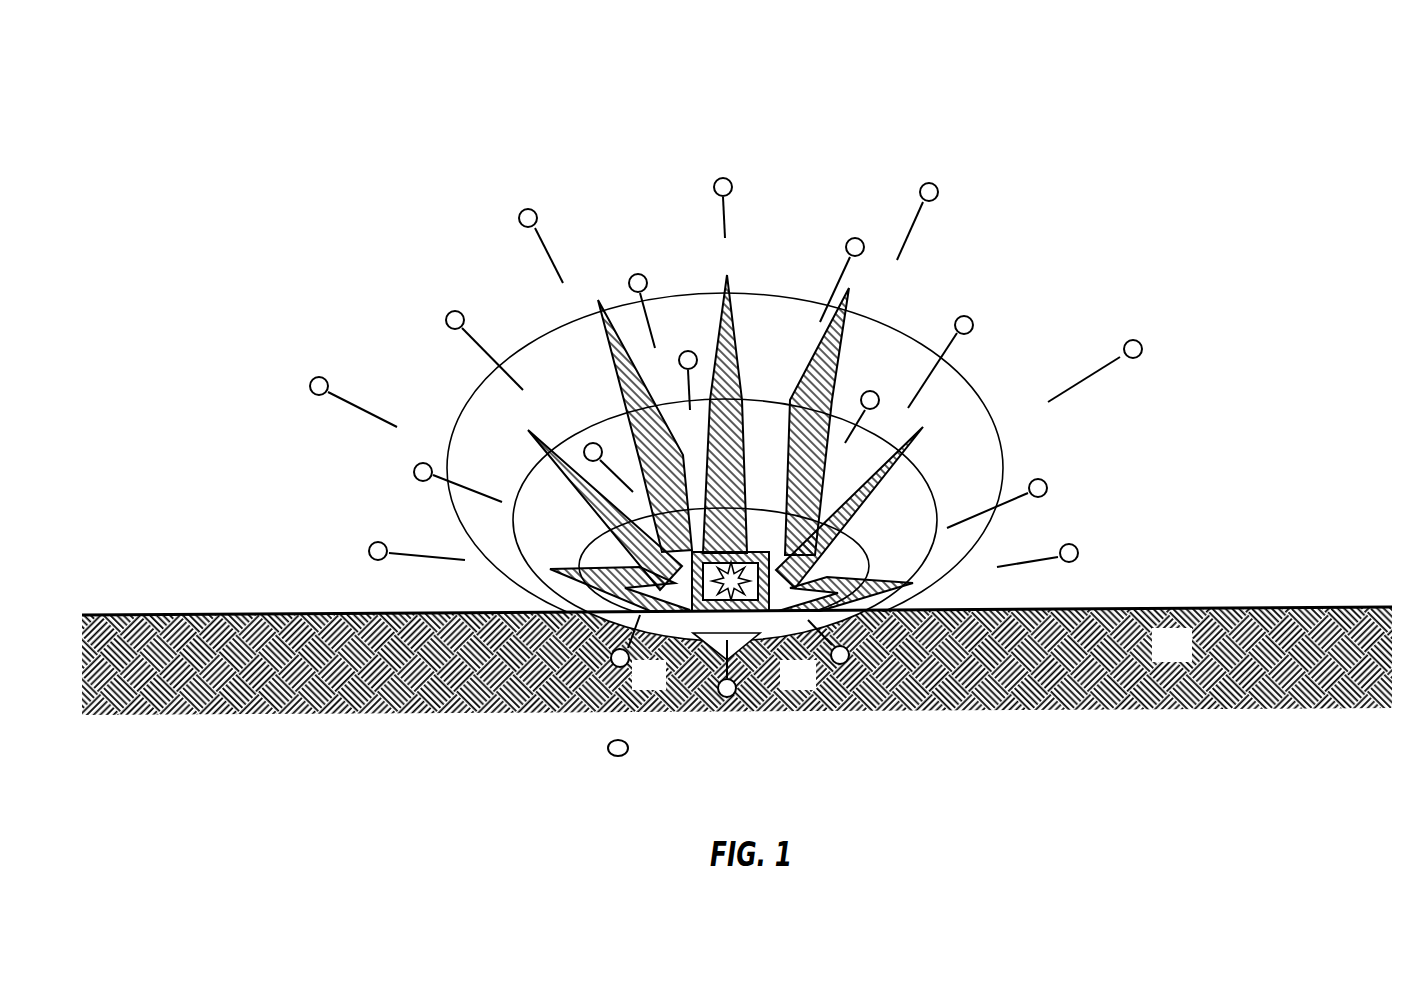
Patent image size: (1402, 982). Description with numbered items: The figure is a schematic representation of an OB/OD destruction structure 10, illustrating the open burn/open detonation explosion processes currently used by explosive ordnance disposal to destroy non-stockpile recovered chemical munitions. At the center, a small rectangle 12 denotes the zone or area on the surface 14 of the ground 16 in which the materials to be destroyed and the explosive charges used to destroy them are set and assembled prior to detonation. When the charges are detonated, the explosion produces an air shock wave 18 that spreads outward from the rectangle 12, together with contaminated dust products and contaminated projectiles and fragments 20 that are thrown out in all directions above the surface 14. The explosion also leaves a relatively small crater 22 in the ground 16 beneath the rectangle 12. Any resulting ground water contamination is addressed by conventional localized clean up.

The OB/OD destruction structure 10 is at (532, 120).
The rectangle 12 is at (703, 640).
The surface 14 is at (737, 593).
The ground 16 is at (1187, 659).
The air shock wave 18 is at (747, 468).
The projectiles and fragments 20 is at (726, 467).
The crater 22 is at (752, 648).